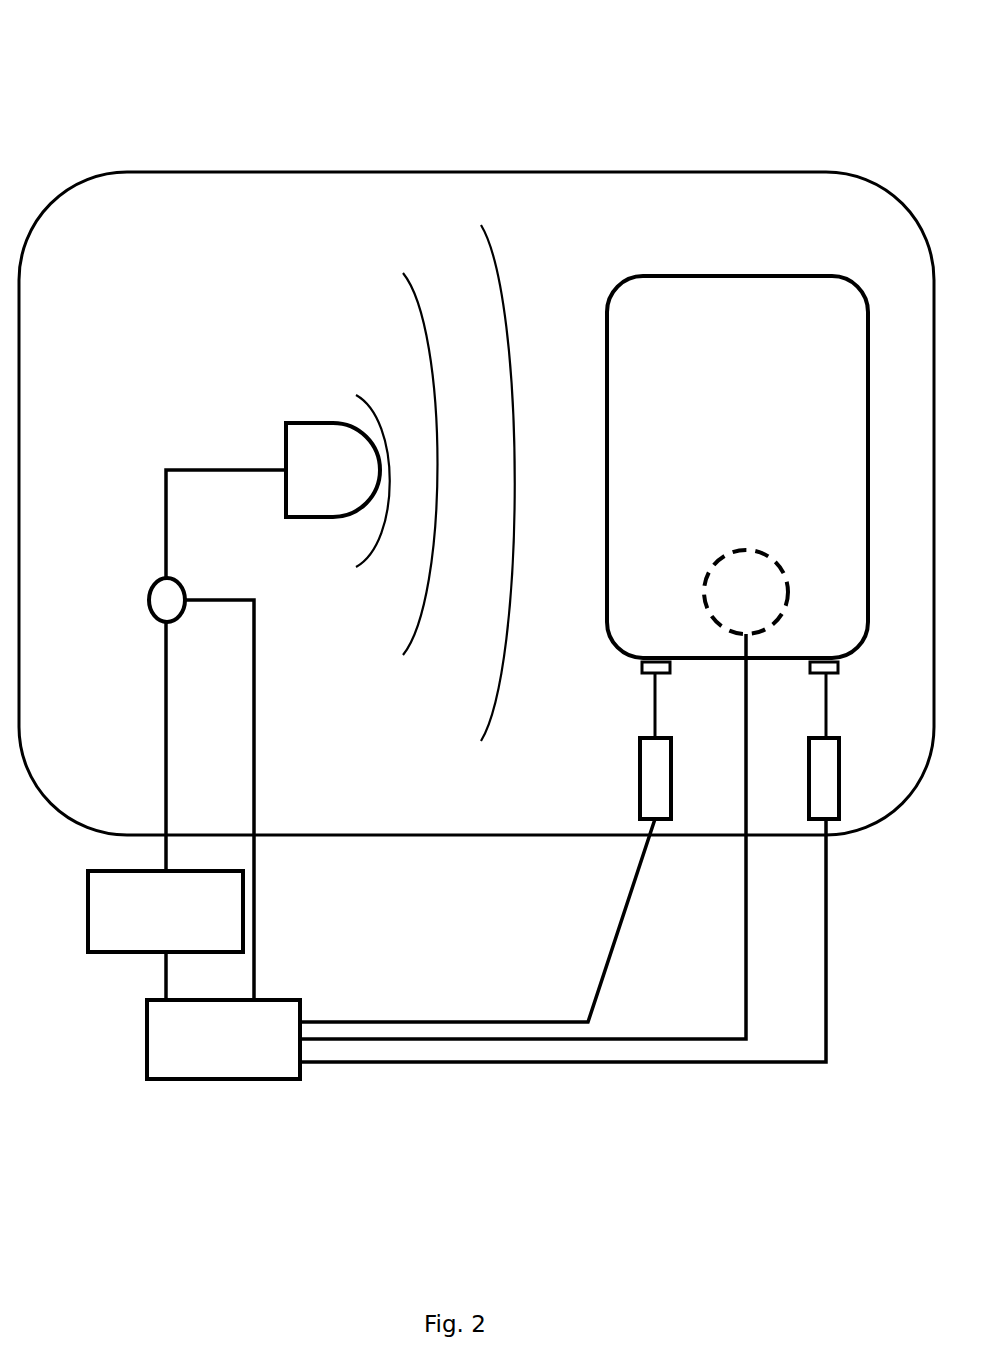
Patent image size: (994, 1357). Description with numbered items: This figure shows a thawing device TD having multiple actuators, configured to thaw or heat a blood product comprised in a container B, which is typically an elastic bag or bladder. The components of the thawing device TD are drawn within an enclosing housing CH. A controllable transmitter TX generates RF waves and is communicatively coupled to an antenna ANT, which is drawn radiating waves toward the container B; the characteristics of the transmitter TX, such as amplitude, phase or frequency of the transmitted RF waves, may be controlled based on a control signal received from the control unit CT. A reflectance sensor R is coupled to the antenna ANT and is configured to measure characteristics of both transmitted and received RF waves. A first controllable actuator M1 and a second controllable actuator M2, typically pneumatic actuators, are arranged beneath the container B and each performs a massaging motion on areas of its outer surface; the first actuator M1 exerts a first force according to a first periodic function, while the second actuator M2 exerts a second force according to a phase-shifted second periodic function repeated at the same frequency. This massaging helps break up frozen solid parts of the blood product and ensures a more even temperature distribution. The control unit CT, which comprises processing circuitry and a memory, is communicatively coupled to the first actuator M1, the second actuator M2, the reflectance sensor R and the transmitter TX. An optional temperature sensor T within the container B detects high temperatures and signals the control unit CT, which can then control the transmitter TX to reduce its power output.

The thawing device TD is at (300, 121).
The housing CH is at (476, 503).
The antenna ANT is at (400, 483).
The reflectance sensor R is at (167, 600).
The controllable transmitter TX is at (165, 911).
The control unit CT is at (223, 1039).
The container B is at (737, 474).
The temperature sensor T is at (544, 794).
The first controllable actuator M1 is at (503, 847).
The second controllable actuator M2 is at (587, 867).